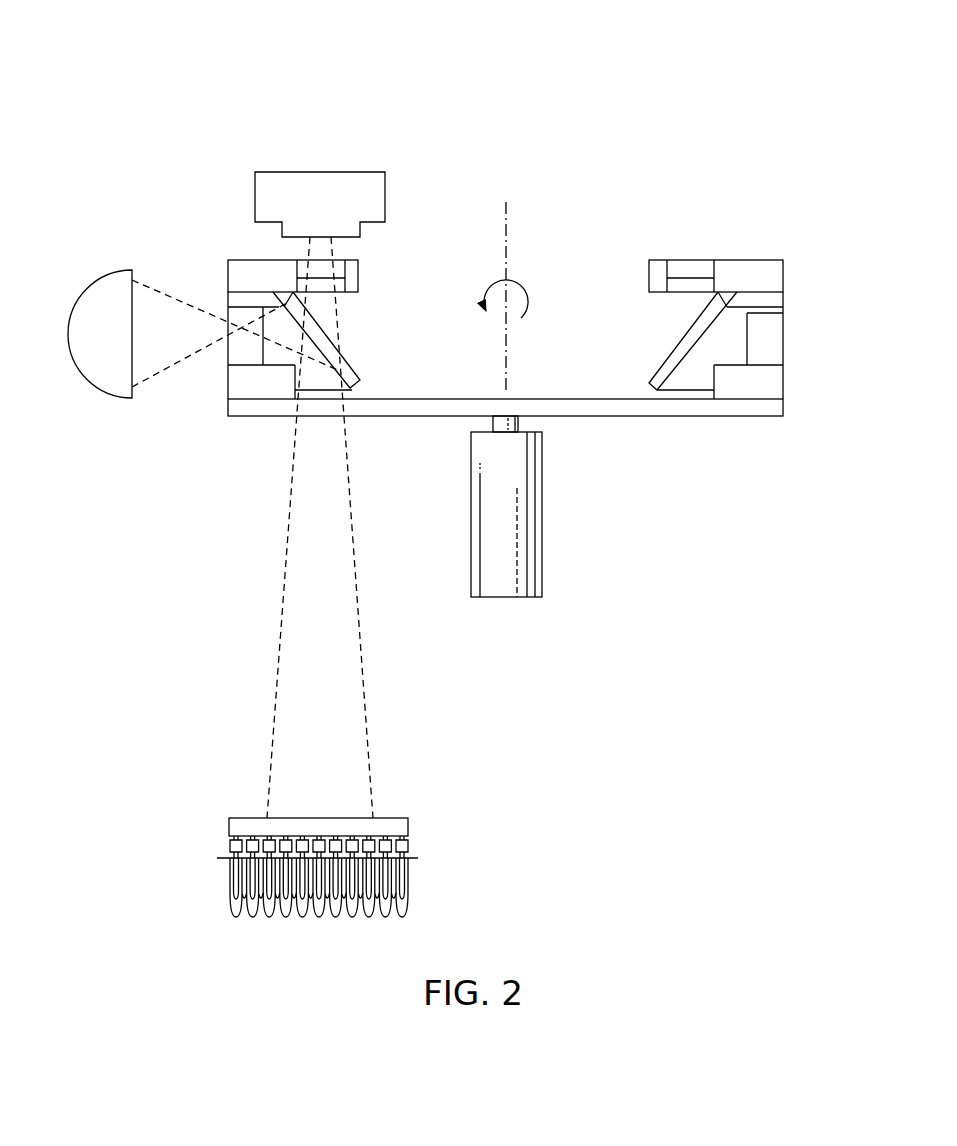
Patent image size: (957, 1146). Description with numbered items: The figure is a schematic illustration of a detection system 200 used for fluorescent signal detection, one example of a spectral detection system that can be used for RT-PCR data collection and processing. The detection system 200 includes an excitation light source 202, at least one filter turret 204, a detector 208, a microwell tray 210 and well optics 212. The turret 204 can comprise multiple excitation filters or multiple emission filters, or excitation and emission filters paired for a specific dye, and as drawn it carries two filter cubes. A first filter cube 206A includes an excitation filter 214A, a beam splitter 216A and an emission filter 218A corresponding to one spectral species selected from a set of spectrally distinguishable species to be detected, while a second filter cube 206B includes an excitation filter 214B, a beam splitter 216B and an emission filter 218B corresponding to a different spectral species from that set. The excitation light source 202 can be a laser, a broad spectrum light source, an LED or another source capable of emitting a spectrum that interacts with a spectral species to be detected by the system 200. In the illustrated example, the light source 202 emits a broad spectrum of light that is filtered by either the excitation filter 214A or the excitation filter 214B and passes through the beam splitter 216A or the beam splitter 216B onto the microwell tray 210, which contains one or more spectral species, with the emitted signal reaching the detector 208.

The detection system 200 is at (247, 55).
The excitation light source 202 is at (110, 272).
The filter turret 204 is at (558, 242).
The first filter cube 206A is at (280, 327).
The second filter cube 206B is at (726, 305).
The detector 208 is at (287, 172).
The microwell tray 210 is at (225, 858).
The well optics 212 is at (410, 818).
The excitation filter 214A is at (228, 358).
The excitation filter 214B is at (784, 337).
The beam splitter 216A is at (352, 371).
The beam splitter 216B is at (655, 368).
The emission filter 218A is at (337, 281).
The emission filter 218B is at (688, 280).